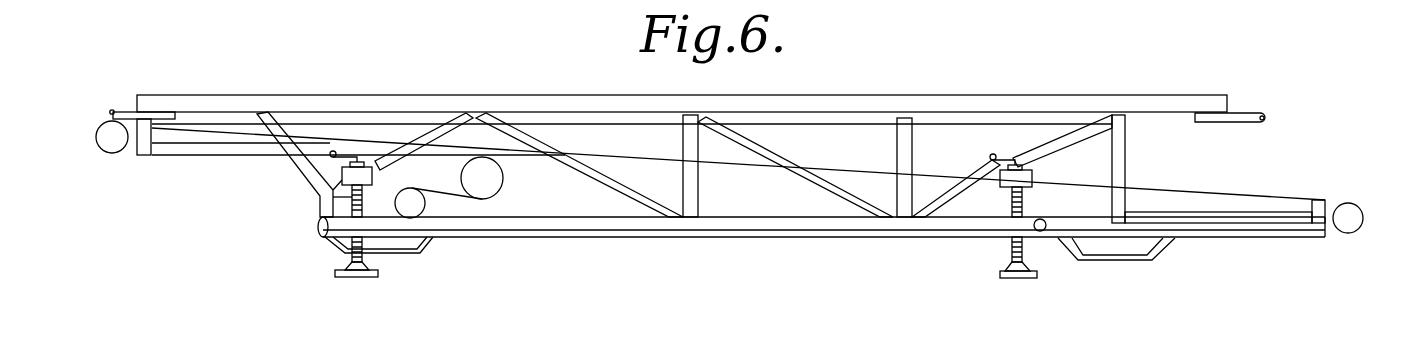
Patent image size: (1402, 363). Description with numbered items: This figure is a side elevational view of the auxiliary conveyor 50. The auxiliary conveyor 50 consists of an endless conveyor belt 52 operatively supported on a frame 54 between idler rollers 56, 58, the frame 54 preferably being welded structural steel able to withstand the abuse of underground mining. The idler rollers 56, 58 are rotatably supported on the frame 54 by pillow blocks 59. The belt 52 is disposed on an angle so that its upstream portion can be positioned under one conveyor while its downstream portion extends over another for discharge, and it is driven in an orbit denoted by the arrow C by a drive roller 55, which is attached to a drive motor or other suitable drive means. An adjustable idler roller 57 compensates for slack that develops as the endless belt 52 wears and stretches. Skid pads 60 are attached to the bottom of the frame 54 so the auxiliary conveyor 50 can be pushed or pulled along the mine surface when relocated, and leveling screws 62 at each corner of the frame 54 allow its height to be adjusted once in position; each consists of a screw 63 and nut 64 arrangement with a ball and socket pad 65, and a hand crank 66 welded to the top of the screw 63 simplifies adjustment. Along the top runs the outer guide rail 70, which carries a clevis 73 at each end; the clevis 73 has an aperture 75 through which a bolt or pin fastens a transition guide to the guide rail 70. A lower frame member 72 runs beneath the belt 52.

The auxiliary conveyor 50 is at (248, 215).
The endless conveyor belt 52 is at (1152, 186).
The frame 54 is at (698, 175).
The drive roller 55 is at (485, 179).
The idler roller 56 is at (1352, 212).
The adjustable idler roller 57 is at (415, 203).
The idler roller 58 is at (108, 138).
The pillow block 59 is at (130, 154).
The skid pad 60 is at (433, 250).
The leveling screw 62 is at (388, 181).
The screw 63 is at (352, 248).
The nut 64 is at (342, 172).
The ball and socket pad 65 is at (360, 277).
The hand crank 66 is at (993, 158).
The outer guide rail 70 is at (455, 100).
The bottom frame tube 72 is at (735, 224).
The clevis 73 is at (125, 112).
The aperture 75 is at (112, 112).
The arrow C is at (890, 158).